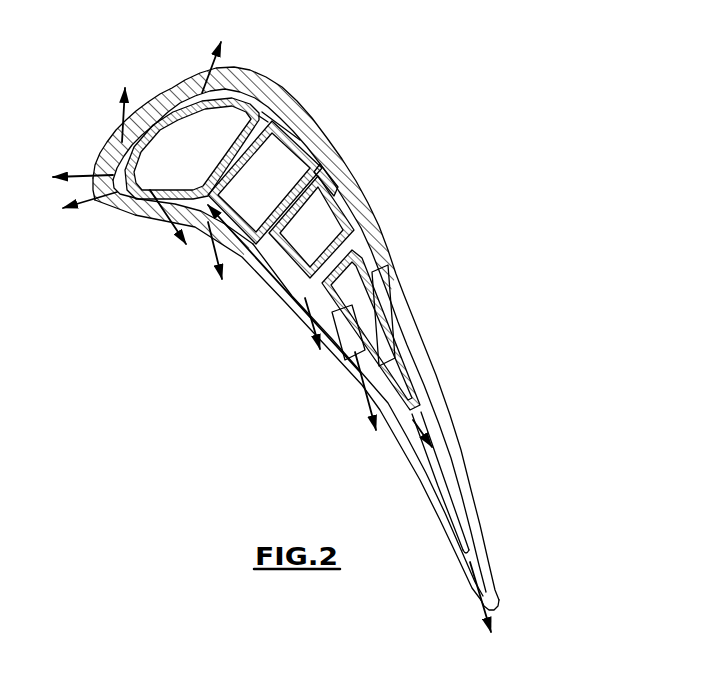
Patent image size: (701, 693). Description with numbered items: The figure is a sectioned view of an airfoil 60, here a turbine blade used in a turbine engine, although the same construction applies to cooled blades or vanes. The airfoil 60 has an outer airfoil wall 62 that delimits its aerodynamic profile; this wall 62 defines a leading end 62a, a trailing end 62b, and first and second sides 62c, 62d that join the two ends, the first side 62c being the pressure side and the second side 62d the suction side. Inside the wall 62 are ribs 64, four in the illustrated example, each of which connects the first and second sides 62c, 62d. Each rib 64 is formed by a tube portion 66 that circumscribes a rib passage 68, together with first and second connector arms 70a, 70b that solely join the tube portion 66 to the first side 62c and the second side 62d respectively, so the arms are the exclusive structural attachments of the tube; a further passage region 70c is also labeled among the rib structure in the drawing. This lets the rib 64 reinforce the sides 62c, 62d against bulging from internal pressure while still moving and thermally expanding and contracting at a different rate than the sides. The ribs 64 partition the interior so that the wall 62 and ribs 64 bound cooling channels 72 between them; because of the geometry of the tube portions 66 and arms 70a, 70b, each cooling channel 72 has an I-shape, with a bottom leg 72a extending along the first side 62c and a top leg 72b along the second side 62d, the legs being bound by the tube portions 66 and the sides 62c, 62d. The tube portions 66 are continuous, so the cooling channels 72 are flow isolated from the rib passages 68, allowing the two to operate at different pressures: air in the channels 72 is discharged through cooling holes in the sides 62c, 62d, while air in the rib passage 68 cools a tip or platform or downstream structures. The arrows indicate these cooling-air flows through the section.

The airfoil 60 is at (300, 333).
The airfoil wall 62 is at (447, 446).
The leading end 62a is at (216, 182).
The trailing end 62b is at (533, 580).
The first side 62c is at (366, 420).
The second side 62d is at (299, 340).
The rib 64 is at (265, 257).
The tube portion 66 is at (287, 102).
The rib passage 68 is at (279, 193).
The first connector arm 70a is at (156, 203).
The second connector arm 70b is at (302, 104).
The cooling passage 70c is at (352, 227).
The cooling channel 72 is at (198, 266).
The bottom leg 72a is at (284, 288).
The top leg 72b is at (367, 287).